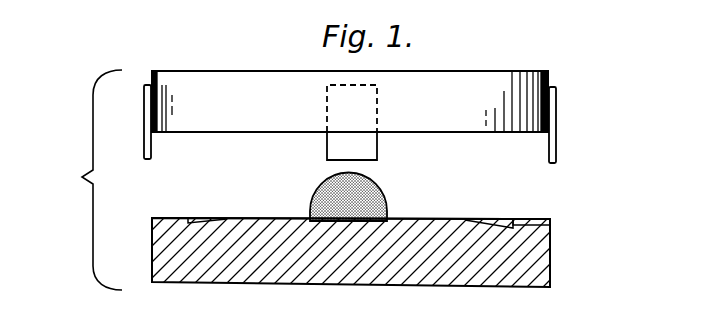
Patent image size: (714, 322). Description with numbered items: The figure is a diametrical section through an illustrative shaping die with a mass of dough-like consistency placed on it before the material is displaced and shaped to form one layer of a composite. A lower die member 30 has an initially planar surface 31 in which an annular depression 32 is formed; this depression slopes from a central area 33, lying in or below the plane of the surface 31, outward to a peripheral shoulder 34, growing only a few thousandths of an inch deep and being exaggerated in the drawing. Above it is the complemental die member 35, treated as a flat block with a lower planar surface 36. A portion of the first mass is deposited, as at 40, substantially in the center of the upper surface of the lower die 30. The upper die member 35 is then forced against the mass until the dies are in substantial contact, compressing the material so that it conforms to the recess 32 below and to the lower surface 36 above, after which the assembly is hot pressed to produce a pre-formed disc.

The lower die member 30 is at (540, 263).
The planar surface 31 is at (535, 219).
The annular depression 32 is at (493, 219).
The central area 33 is at (386, 218).
The peripheral shoulder 34 is at (550, 226).
The complemental die member 35 is at (549, 84).
The lower planar surface 36 is at (237, 134).
The first mass 40 is at (327, 190).